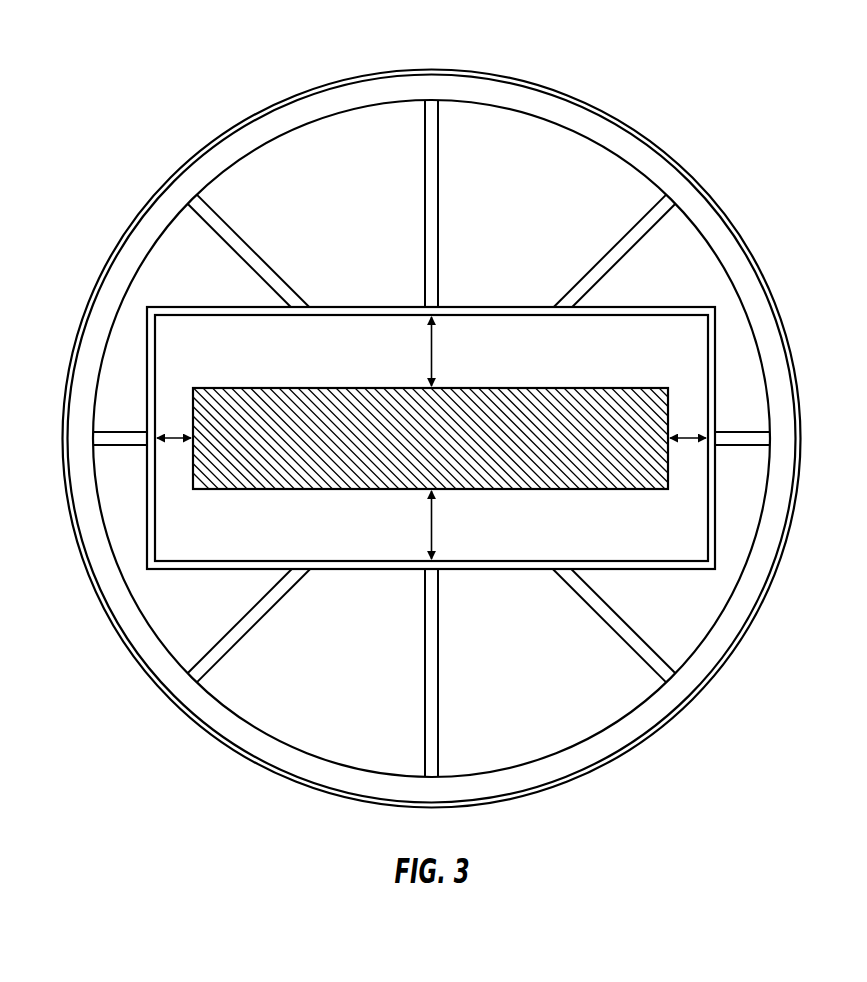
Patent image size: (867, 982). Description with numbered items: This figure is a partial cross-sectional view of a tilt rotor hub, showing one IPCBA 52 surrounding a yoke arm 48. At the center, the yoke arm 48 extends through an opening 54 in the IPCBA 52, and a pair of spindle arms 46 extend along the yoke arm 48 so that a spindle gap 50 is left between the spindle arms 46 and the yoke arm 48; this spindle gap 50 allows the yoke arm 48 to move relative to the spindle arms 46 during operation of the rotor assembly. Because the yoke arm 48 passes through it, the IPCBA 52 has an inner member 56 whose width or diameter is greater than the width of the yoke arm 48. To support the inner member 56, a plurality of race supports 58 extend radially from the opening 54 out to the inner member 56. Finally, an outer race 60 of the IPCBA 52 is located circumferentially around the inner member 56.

The spindle arm 46 is at (147, 372).
The yoke arm 48 is at (236, 411).
The spindle gap 50 is at (174, 436).
The IPCBA 52 is at (141, 245).
The opening 54 is at (304, 539).
The inner member 56 is at (376, 92).
The race support 58 is at (433, 198).
The outer race 60 is at (582, 99).